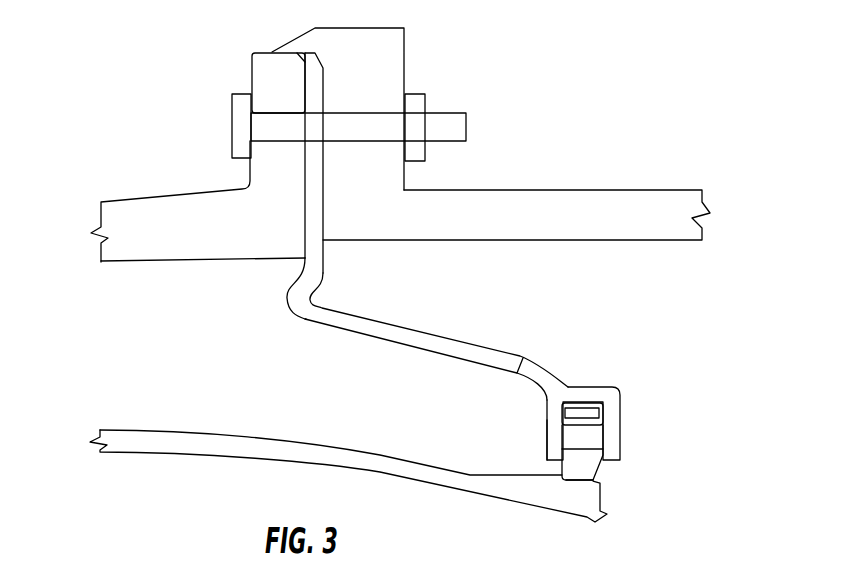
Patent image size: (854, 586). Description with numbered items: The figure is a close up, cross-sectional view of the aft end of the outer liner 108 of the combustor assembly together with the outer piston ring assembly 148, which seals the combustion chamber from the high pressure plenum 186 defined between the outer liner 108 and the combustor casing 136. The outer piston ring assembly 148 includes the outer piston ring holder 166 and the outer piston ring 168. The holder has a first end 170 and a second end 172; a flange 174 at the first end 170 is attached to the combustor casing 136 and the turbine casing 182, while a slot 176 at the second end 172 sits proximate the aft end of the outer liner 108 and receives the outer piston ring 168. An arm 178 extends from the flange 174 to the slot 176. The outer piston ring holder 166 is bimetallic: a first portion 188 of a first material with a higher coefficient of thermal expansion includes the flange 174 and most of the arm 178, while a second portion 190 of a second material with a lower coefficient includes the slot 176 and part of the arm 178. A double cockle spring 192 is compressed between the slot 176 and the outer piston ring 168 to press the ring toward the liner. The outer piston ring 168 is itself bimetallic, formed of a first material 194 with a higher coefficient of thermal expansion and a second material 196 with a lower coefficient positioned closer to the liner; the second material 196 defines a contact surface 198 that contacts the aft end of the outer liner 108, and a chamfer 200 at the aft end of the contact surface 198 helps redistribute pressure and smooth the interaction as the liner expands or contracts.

The outer liner 108 is at (165, 442).
The combustor casing 136 is at (135, 222).
The outer piston ring assembly 148 is at (293, 370).
The outer piston ring holder 166 is at (475, 260).
The outer piston ring 168 is at (593, 438).
The first end 170 is at (302, 230).
The second end 172 is at (638, 415).
The flange 174 is at (310, 170).
The slot 176 is at (553, 415).
The arm 178 is at (435, 340).
The turbine casing 182 is at (590, 213).
The high pressure plenum 186 is at (187, 293).
The first portion 188 is at (470, 327).
The second portion 190 is at (603, 383).
The double cockle spring 192 is at (590, 412).
The first material 194 is at (570, 437).
The second material 196 is at (572, 463).
The contact surface 198 is at (580, 483).
The chamfer 200 is at (605, 468).